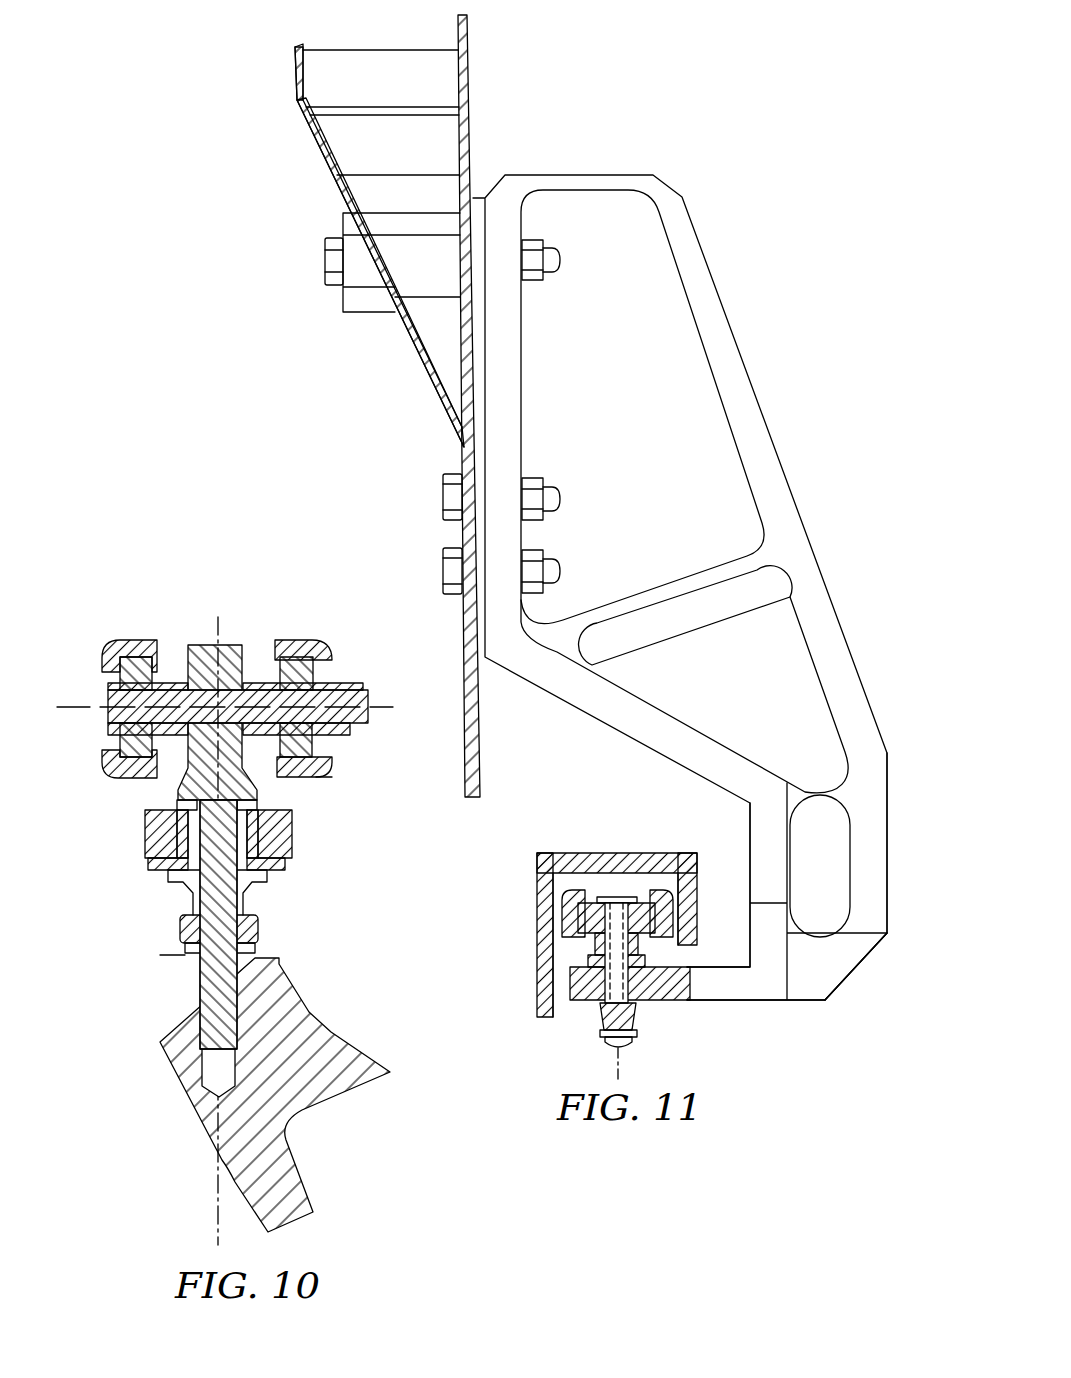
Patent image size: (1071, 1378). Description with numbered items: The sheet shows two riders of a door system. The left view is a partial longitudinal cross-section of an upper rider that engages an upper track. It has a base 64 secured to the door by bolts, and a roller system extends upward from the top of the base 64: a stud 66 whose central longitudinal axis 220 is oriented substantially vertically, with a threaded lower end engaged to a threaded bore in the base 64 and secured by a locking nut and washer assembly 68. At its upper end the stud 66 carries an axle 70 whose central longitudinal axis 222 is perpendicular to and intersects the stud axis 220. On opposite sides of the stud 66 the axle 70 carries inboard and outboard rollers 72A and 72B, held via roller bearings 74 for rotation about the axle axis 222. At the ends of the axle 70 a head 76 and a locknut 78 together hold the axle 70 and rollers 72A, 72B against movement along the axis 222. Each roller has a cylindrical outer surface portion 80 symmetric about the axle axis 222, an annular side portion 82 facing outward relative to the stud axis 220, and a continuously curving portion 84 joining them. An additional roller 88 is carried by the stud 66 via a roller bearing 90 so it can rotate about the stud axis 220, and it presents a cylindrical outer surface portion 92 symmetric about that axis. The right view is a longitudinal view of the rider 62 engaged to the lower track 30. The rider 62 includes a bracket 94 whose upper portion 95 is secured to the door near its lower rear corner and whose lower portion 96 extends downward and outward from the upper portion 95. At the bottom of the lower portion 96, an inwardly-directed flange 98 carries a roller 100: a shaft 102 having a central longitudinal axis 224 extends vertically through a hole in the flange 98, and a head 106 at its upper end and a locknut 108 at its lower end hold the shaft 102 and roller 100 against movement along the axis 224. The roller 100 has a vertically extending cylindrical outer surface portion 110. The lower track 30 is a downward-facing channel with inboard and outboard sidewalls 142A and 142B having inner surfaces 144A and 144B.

In FIG. 11, the lower track 30 is at (665, 904).
In FIG. 11, the rider 62 is at (890, 857).
In FIG. 10, the base 64 is at (310, 1030).
In FIG. 10, the stud 66 is at (228, 1002).
In FIG. 10, the locking nut and washer assembly 68 is at (266, 927).
In FIG. 10, the axle 70 is at (258, 690).
In FIG. 10, the inboard roller 72A is at (122, 641).
In FIG. 10, the outboard roller 72B is at (298, 640).
In FIG. 10, the roller bearings 74 is at (118, 678).
In FIG. 10, the head 76 is at (118, 727).
In FIG. 10, the locknut 78 is at (330, 735).
In FIG. 10, the cylindrical outer surface portion 80 is at (280, 780).
In FIG. 10, the annular side portion 82 is at (332, 765).
In FIG. 10, the continuously curving portion 84 is at (326, 777).
In FIG. 10, the additional roller 88 is at (290, 838).
In FIG. 10, the roller bearing 90 is at (246, 859).
In FIG. 10, the cylindrical outer surface portion 92 is at (145, 850).
In FIG. 11, the bracket 94 is at (866, 740).
In FIG. 11, the upper portion 95 is at (485, 476).
In FIG. 11, the lower portion 96 is at (870, 935).
In FIG. 11, the inwardly-directed flange 98 is at (757, 990).
In FIG. 11, the roller 100 is at (665, 935).
In FIG. 11, the shaft 102 is at (624, 996).
In FIG. 11, the head 106 is at (600, 893).
In FIG. 11, the locknut 108 is at (597, 1018).
In FIG. 11, the cylindrical outer surface portion 110 is at (677, 926).
In FIG. 11, the inboard sidewall 142A is at (546, 900).
In FIG. 11, the outboard sidewall 142B is at (700, 868).
In FIG. 11, the inner surface 144A is at (563, 946).
In FIG. 11, the inner surface 144B is at (667, 890).
In FIG. 10, the central longitudinal axis 220 is at (221, 1233).
In FIG. 10, the central longitudinal axis 222 is at (395, 707).
In FIG. 11, the central longitudinal axis 224 is at (616, 1073).